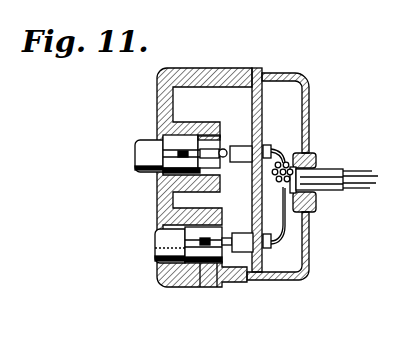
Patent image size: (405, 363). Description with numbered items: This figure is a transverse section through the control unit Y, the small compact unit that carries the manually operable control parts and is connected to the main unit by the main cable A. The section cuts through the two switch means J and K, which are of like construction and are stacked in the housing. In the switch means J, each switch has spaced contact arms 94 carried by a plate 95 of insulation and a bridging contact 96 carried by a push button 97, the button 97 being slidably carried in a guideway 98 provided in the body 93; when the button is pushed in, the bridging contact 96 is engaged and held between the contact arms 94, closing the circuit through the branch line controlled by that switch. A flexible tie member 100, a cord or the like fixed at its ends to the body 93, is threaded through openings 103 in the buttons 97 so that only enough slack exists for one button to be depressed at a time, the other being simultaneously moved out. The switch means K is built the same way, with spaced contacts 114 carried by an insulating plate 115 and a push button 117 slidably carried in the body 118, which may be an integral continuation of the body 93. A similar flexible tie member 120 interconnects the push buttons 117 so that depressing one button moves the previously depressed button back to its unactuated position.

The control unit Y is at (233, 64).
The body 118 is at (158, 117).
The insulating plate 115 is at (262, 103).
The plate of insulation 95 is at (305, 267).
The main cable A is at (334, 201).
The switch means K is at (134, 153).
The push button 117 is at (143, 143).
The flexible tie member 120 is at (187, 150).
The spaced contacts 114 is at (243, 148).
The switch means J is at (152, 244).
The flexible tie member 100 is at (158, 224).
The push button 97 is at (160, 247).
The guideway 98 is at (212, 247).
The bridging contact 96 is at (231, 235).
The spaced contact arms 94 is at (247, 253).
The openings 103 is at (183, 263).
The body 93 is at (197, 281).